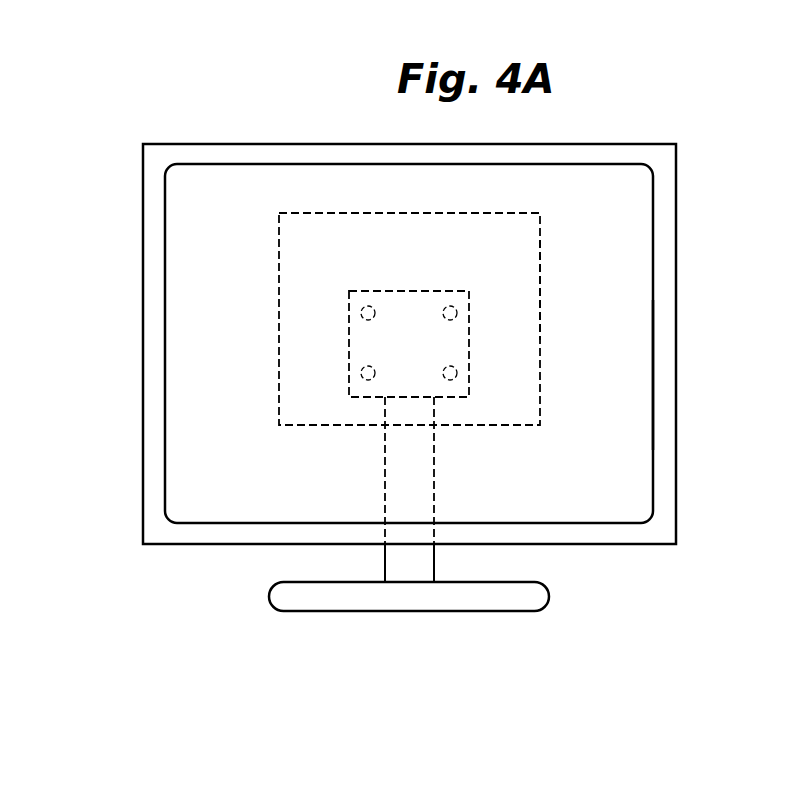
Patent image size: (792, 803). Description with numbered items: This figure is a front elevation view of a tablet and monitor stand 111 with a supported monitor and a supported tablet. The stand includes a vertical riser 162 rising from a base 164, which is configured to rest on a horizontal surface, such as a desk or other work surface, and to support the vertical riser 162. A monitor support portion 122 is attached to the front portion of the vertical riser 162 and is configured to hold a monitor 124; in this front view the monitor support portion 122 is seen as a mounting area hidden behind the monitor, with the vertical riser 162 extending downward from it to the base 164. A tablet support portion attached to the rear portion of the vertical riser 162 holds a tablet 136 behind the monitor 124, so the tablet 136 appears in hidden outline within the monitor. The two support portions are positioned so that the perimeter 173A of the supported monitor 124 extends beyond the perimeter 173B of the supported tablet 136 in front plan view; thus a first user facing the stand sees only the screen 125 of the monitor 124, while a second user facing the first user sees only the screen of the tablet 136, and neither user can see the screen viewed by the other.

The tablet and monitor stand 111 is at (572, 113).
The monitor 124 is at (143, 392).
The screen of supported monitor 125 is at (560, 495).
The perimeter of supported monitor 173A is at (653, 373).
The perimeter of supported tablet 173B is at (540, 289).
The tablet 136 is at (277, 247).
The monitor support portion 122 is at (450, 354).
The vertical riser 162 is at (354, 565).
The base 164 is at (517, 603).